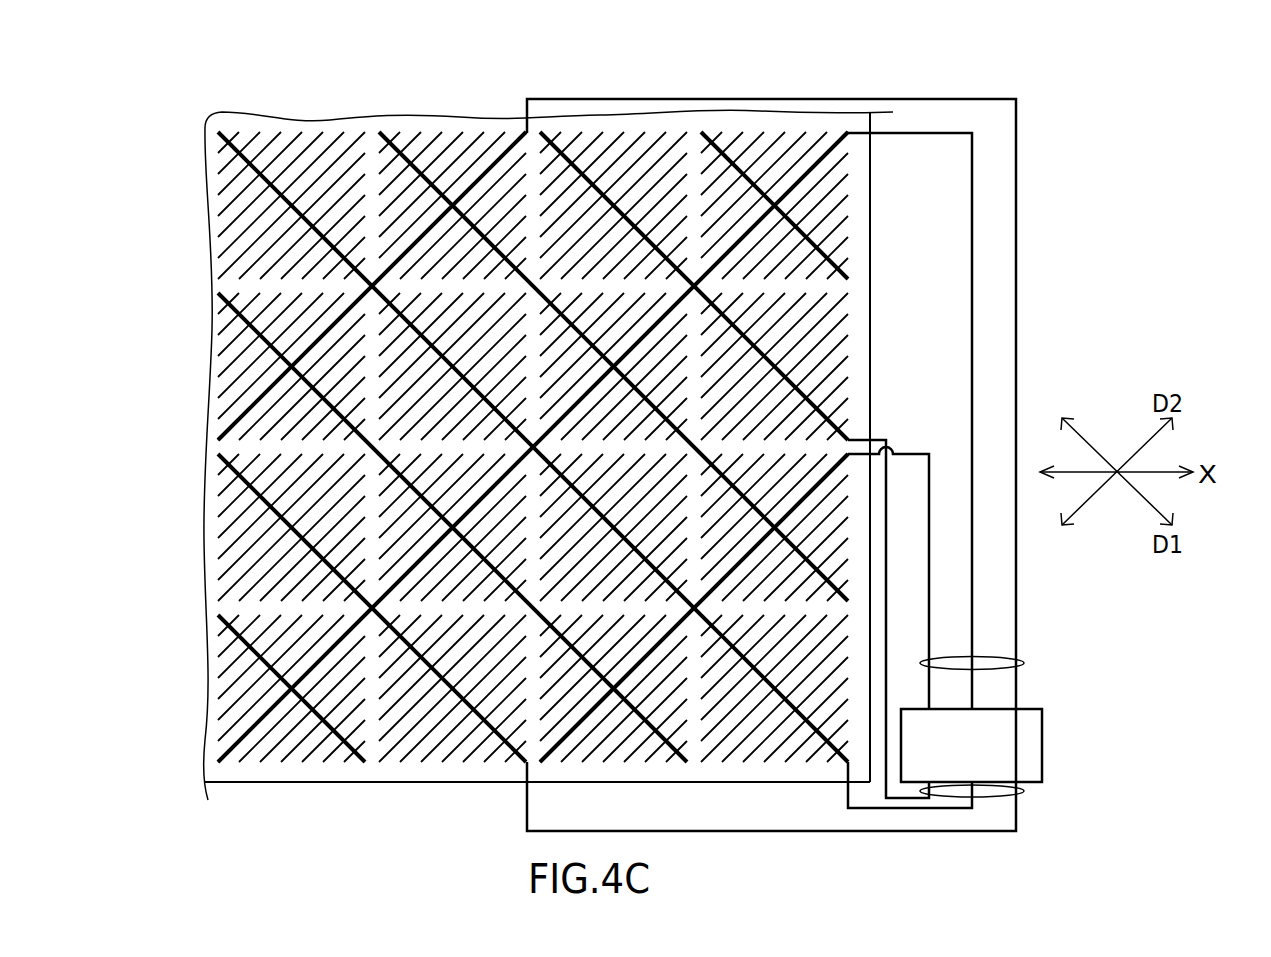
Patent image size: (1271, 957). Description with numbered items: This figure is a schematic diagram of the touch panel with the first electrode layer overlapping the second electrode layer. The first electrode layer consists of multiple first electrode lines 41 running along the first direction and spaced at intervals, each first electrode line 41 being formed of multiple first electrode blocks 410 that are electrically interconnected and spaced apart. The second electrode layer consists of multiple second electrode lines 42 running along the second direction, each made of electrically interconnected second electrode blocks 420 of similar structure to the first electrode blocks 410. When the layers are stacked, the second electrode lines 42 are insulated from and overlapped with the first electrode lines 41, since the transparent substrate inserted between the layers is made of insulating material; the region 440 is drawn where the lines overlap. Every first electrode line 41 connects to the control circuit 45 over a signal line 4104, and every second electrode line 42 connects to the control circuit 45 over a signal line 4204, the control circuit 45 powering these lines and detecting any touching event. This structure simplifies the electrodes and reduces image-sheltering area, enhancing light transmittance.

The first electrode line 41 is at (236, 96).
The second electrode line 42 is at (845, 87).
The first electrode block 410 is at (243, 227).
The second electrode block 420 is at (835, 214).
The electrode pattern region 440 is at (400, 372).
The signal line 4104 is at (992, 795).
The signal line 4204 is at (992, 657).
The control circuit 45 is at (1043, 745).